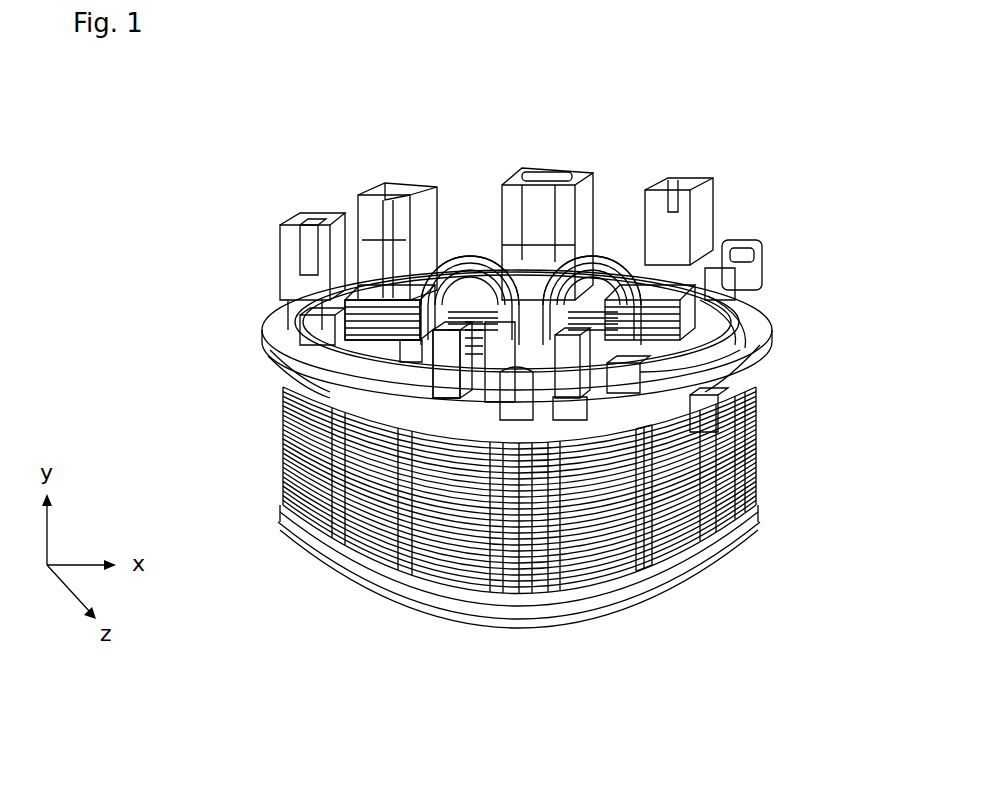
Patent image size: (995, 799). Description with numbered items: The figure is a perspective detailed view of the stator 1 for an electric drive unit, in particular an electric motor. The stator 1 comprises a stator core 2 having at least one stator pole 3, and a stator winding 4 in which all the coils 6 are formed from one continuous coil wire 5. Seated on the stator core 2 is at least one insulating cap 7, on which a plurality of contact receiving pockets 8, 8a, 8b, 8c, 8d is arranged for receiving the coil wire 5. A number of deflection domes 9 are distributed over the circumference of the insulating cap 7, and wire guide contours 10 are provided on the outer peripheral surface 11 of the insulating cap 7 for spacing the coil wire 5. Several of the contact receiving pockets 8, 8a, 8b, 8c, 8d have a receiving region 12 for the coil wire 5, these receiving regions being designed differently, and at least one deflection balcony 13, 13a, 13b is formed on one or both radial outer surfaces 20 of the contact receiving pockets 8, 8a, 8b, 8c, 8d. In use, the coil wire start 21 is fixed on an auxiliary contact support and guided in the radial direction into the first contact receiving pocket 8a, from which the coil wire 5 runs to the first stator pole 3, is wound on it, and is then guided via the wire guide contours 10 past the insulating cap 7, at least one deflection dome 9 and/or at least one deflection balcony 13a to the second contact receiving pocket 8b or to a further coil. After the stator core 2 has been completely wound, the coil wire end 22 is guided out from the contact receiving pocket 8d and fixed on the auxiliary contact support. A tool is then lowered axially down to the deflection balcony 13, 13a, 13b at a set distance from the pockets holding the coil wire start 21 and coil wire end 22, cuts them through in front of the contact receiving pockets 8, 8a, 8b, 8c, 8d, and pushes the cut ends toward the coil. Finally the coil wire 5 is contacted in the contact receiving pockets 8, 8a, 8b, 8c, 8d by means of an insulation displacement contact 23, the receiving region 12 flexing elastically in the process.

The stator 1 is at (203, 161).
The stator core 2 is at (317, 447).
The stator pole 3 is at (484, 304).
The stator winding 4 is at (597, 285).
The coil wire 5 is at (351, 215).
The coil 6 is at (531, 280).
The insulating cap 7 is at (290, 368).
The contact receiving pocket 8 is at (382, 320).
The first contact receiving pocket 8a is at (702, 426).
The second contact receiving pocket 8b is at (330, 316).
The contact receiving pocket 8c is at (285, 265).
The contact receiving pocket 8d is at (698, 340).
The deflection dome 9 is at (734, 289).
The wire guide contour 10 is at (433, 358).
The outer peripheral surface 11 is at (296, 346).
The receiving region 12 is at (540, 360).
The deflection balcony 13 is at (446, 364).
The deflection balcony 13a is at (512, 352).
The deflection balcony 13b is at (368, 357).
The radial outer surface 20 is at (752, 326).
The coil wire start 21 is at (520, 355).
The coil wire end 22 is at (702, 361).
The insulation displacement contact 23 is at (276, 250).